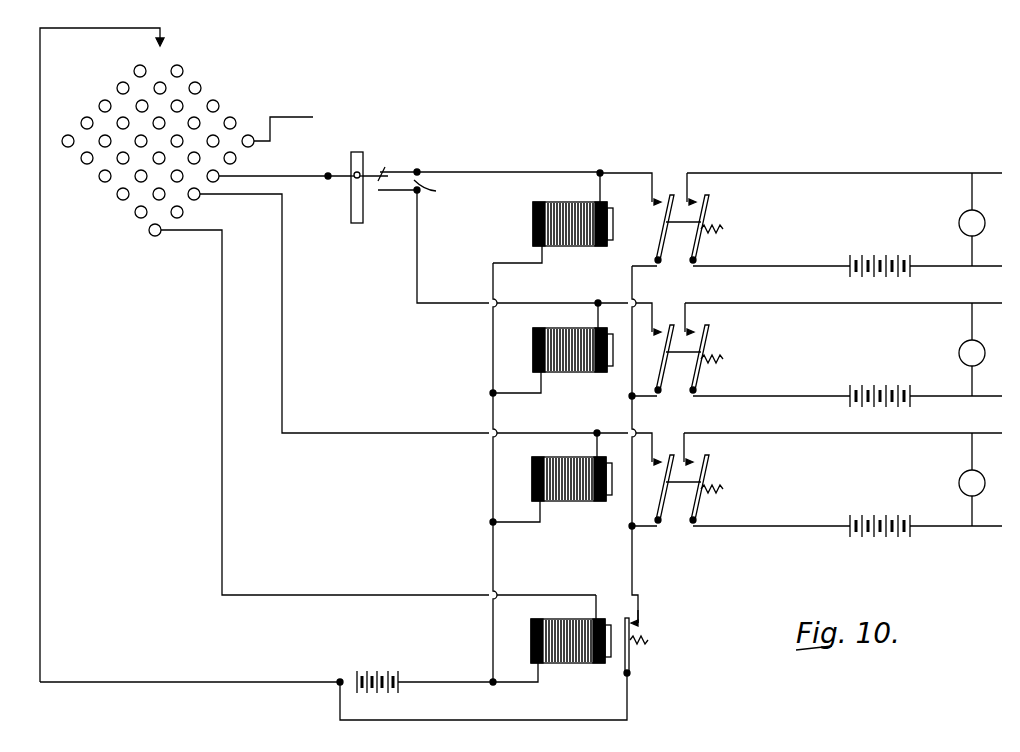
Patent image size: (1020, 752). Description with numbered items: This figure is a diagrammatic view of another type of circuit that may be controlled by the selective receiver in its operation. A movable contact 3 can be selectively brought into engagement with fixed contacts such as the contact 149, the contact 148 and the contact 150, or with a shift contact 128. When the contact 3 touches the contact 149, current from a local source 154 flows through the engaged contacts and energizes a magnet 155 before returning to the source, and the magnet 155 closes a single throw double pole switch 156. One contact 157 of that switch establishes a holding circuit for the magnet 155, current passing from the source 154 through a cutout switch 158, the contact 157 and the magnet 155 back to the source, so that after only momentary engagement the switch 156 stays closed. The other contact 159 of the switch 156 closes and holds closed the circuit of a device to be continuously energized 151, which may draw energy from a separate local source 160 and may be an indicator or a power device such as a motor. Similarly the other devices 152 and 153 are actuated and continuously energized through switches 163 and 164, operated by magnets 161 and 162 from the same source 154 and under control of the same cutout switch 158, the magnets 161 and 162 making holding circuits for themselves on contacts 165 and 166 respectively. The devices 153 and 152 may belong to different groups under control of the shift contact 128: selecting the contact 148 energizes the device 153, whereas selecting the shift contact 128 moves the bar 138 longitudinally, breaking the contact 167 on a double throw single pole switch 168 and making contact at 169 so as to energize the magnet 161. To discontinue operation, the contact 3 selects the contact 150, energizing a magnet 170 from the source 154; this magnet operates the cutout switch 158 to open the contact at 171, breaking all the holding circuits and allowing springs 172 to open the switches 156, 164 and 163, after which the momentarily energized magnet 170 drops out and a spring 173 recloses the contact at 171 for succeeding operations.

The contact 3 is at (165, 41).
The shift contact 128 is at (249, 134).
The contact 148 is at (219, 172).
The contact 149 is at (199, 199).
The contact 150 is at (155, 237).
The bar 138 is at (351, 219).
The contact 167 is at (385, 167).
The double throw single pole switch 168 is at (440, 190).
The contact 169 is at (379, 186).
The magnet 162 is at (578, 247).
The magnet 161 is at (580, 373).
The magnet 155 is at (578, 503).
The magnet 170 is at (577, 663).
The contact 166 is at (661, 195).
The switch 164 is at (684, 253).
The contact 165 is at (658, 326).
The switch 163 is at (683, 380).
The contact 157 is at (658, 456).
The single throw double pole switch 156 is at (683, 511).
The contact 159 is at (696, 457).
The spring 172 is at (722, 227).
The device 153 is at (960, 221).
The device 152 is at (961, 350).
The device to be continuously energized 151 is at (962, 478).
The local source 160 is at (886, 536).
The local source 154 is at (380, 670).
The contact 171 is at (641, 621).
The spring 173 is at (650, 640).
The cutout switch 158 is at (634, 662).